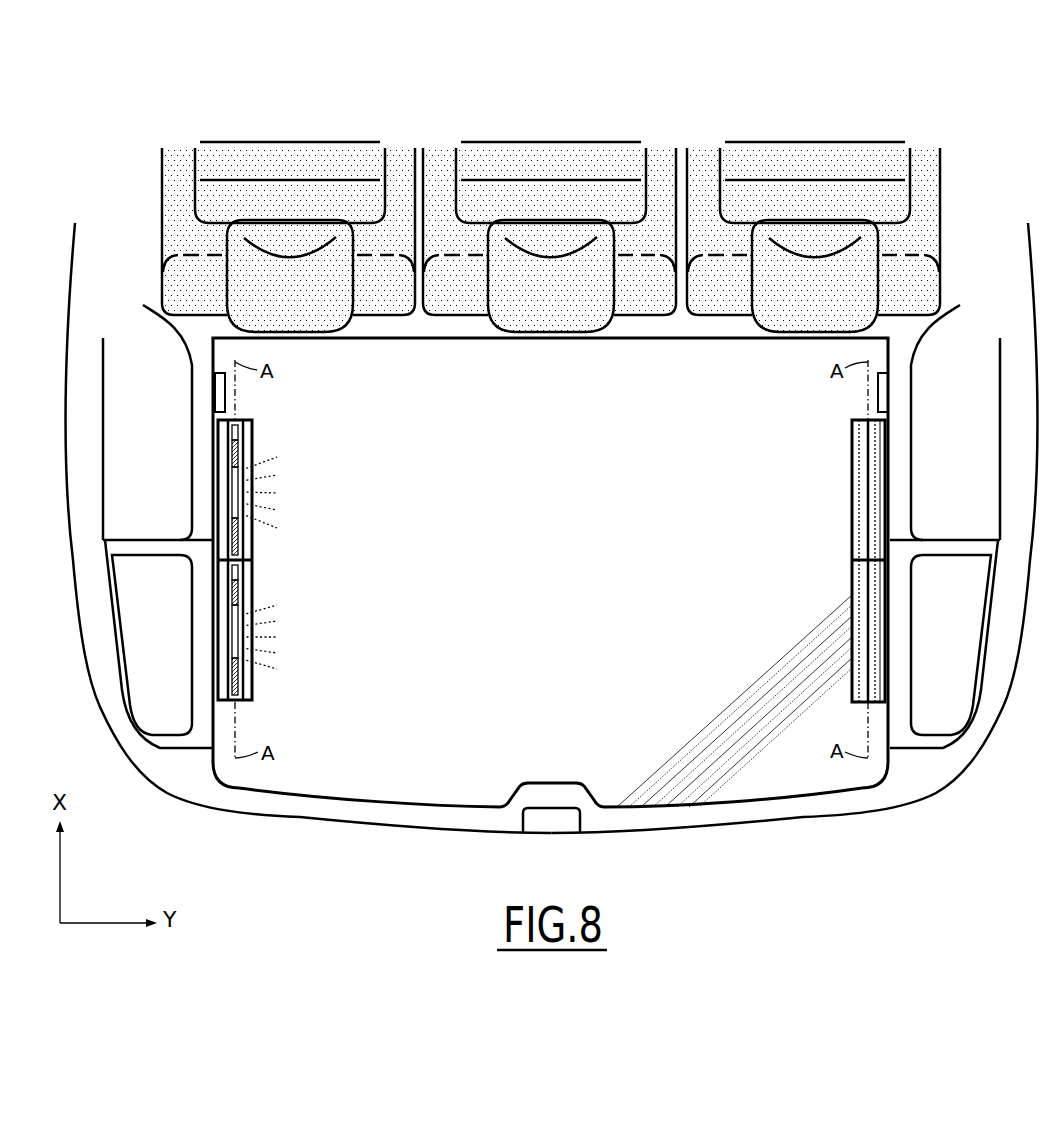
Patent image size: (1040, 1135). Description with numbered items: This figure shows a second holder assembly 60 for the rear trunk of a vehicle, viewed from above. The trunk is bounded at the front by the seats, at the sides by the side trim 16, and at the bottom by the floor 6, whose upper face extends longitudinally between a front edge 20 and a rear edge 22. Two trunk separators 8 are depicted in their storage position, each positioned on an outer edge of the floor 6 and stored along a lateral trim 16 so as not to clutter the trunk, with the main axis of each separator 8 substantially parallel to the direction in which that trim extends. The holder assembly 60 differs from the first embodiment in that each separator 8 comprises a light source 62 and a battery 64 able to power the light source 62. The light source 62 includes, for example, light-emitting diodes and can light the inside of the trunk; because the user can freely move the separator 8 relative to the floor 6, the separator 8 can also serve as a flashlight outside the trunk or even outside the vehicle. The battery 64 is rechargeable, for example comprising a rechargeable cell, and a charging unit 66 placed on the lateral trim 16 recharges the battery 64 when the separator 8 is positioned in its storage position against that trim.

The floor 6 is at (545, 569).
The trunk separator 8 is at (256, 538).
The side trim 16 is at (214, 462).
The front edge 20 is at (557, 348).
The rear edge 22 is at (663, 806).
The second holder assembly 60 is at (428, 770).
The light source 62 is at (233, 495).
The battery 64 is at (234, 434).
The charging unit 66 is at (215, 383).